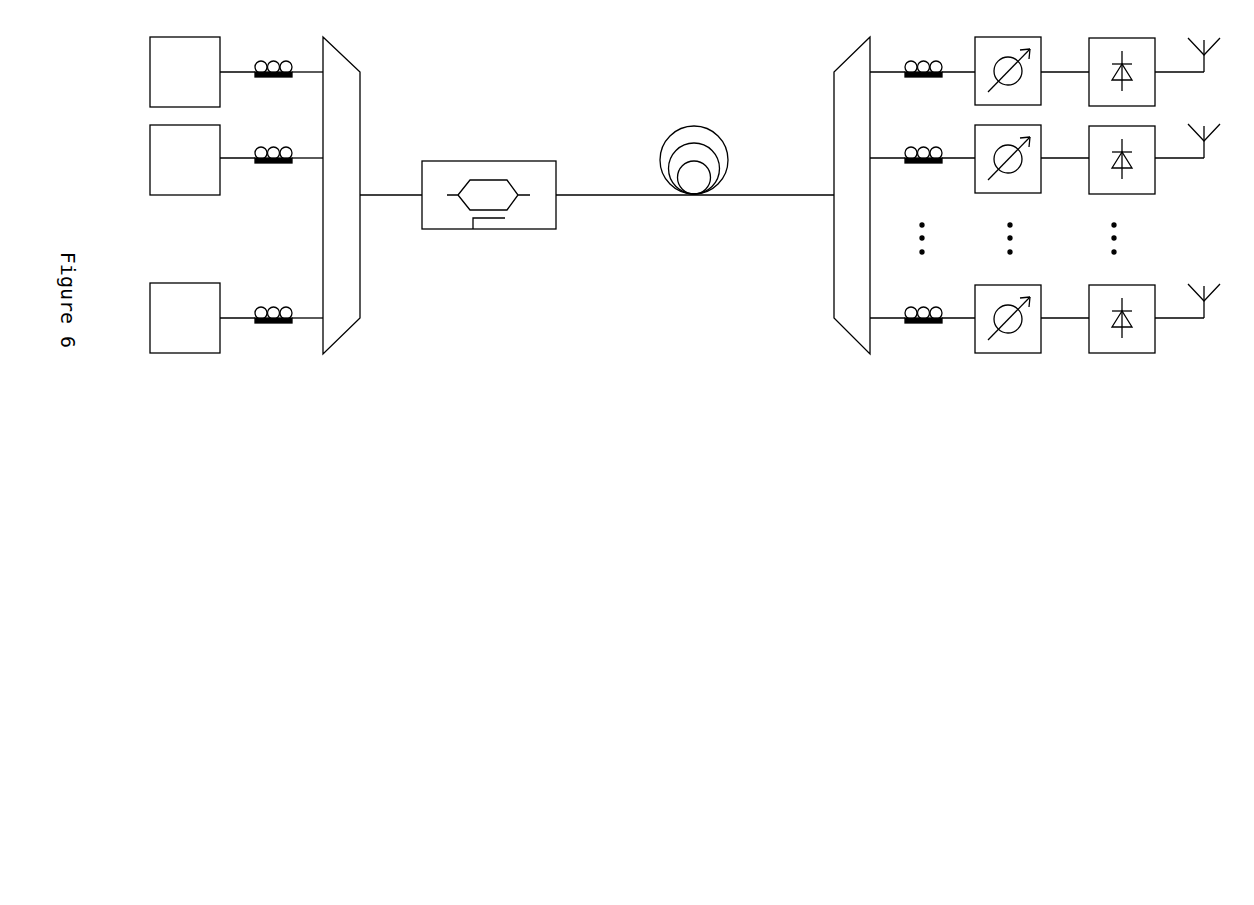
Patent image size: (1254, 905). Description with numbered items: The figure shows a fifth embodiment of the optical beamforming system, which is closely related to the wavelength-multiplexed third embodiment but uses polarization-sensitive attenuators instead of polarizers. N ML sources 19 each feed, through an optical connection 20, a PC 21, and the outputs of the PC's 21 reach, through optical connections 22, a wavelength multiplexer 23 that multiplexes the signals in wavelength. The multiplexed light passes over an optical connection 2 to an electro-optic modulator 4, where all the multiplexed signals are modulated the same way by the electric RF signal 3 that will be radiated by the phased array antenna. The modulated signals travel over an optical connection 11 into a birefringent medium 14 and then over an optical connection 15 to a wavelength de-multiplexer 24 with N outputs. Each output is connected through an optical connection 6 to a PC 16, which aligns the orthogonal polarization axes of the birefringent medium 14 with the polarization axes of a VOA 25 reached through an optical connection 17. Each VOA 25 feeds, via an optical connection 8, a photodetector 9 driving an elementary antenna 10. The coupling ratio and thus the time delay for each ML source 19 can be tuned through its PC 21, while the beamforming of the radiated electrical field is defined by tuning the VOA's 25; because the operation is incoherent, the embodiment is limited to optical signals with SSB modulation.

The ML sources 19 is at (185, 555).
The optical connection 20 is at (237, 337).
The PC 21 is at (273, 337).
The optical connection 22 is at (306, 337).
The wavelength multiplexer 23 is at (342, 355).
The optical connection 2 is at (395, 213).
The electric RF signal 3 is at (475, 236).
The electro-optic modulator 4 is at (536, 245).
The optical connection 11 is at (622, 213).
The birefringent medium 14 is at (697, 213).
The optical connection 15 is at (773, 213).
The wavelength de-multiplexer 24 is at (853, 355).
The optical connection 6 is at (888, 337).
The PC 16 is at (922, 337).
The optical connection 17 is at (957, 348).
The VOA 25 is at (1010, 555).
The optical connection 8 is at (1068, 337).
The photodetector 9 is at (1125, 555).
The elementary antenna 10 is at (1199, 337).